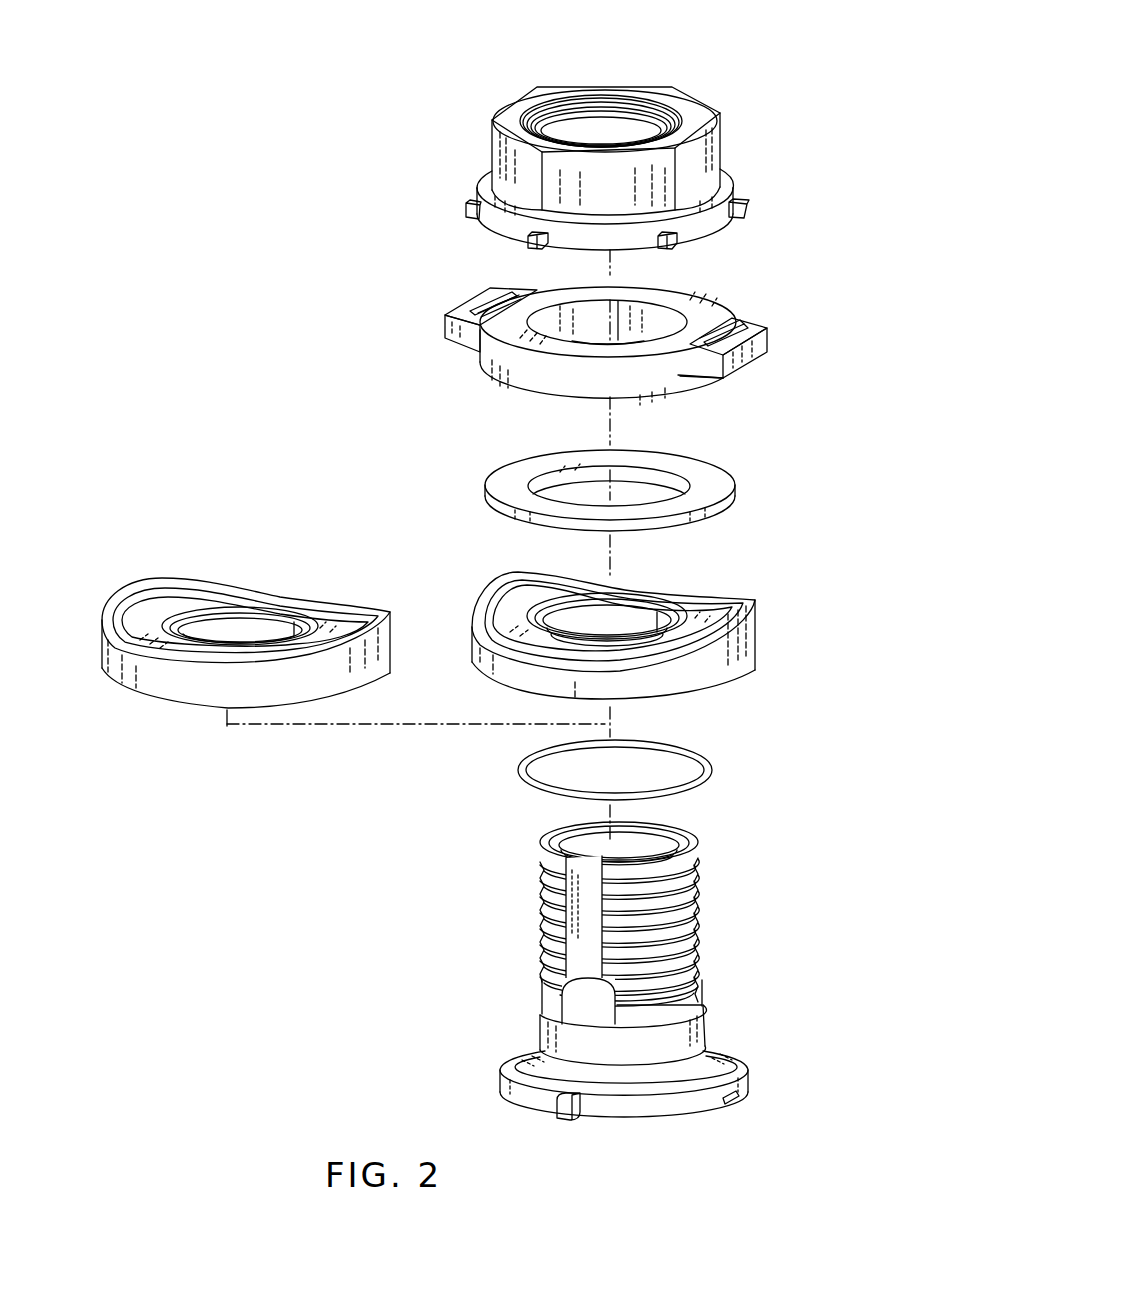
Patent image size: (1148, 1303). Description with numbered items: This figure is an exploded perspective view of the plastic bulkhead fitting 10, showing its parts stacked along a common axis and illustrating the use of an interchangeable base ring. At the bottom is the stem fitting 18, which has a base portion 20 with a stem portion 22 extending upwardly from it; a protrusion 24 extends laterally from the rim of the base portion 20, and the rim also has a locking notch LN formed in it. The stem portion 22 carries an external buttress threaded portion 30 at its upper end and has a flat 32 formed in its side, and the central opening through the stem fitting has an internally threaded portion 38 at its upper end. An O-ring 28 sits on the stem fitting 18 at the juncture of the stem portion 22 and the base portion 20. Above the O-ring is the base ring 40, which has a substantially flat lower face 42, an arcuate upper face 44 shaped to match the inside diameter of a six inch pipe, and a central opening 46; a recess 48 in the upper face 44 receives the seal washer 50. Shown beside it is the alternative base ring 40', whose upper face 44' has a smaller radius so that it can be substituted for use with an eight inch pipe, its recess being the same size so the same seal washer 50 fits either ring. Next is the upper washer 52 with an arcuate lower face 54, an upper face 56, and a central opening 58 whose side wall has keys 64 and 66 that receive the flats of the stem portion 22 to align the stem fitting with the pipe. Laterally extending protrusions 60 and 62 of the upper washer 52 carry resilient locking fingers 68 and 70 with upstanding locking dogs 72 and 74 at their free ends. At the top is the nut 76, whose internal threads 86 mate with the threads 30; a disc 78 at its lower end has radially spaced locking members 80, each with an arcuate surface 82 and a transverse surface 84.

The bulkhead fitting 10 is at (381, 314).
The stem fitting 18 is at (751, 964).
The base portion 20 is at (776, 1062).
The stem portion 22 is at (531, 955).
The protrusion 24 is at (555, 1120).
The O-ring 28 is at (712, 765).
The external buttress threaded portion 30 is at (670, 907).
The flat 32 is at (588, 898).
The internally threaded portion 38 is at (668, 837).
The base ring 40 is at (634, 622).
The base ring 40' is at (246, 600).
The lower face 42 is at (722, 683).
The upper face 44 is at (659, 584).
The upper face 44' is at (245, 572).
The central opening 46 is at (583, 633).
The recess 48 is at (505, 603).
The seal washer 50 is at (727, 481).
The upper washer 52 is at (758, 288).
The lower face 54 is at (533, 402).
The upper face 56 is at (713, 306).
The central opening 58 is at (562, 320).
The protrusion 60 is at (445, 338).
The protrusion 62 is at (768, 354).
The key 64 is at (587, 340).
The key 66 is at (643, 315).
The resilient locking finger 68 is at (470, 303).
The resilient locking finger 70 is at (748, 322).
The locking dog 72 is at (510, 296).
The locking dog 74 is at (680, 377).
The nut 76 is at (746, 122).
The disc 78 is at (717, 228).
The locking member 80 is at (447, 206).
The arcuate surface 82 is at (657, 229).
The transverse surface 84 is at (723, 192).
The internal threads 86 is at (640, 94).
The locking notch LN is at (727, 1100).